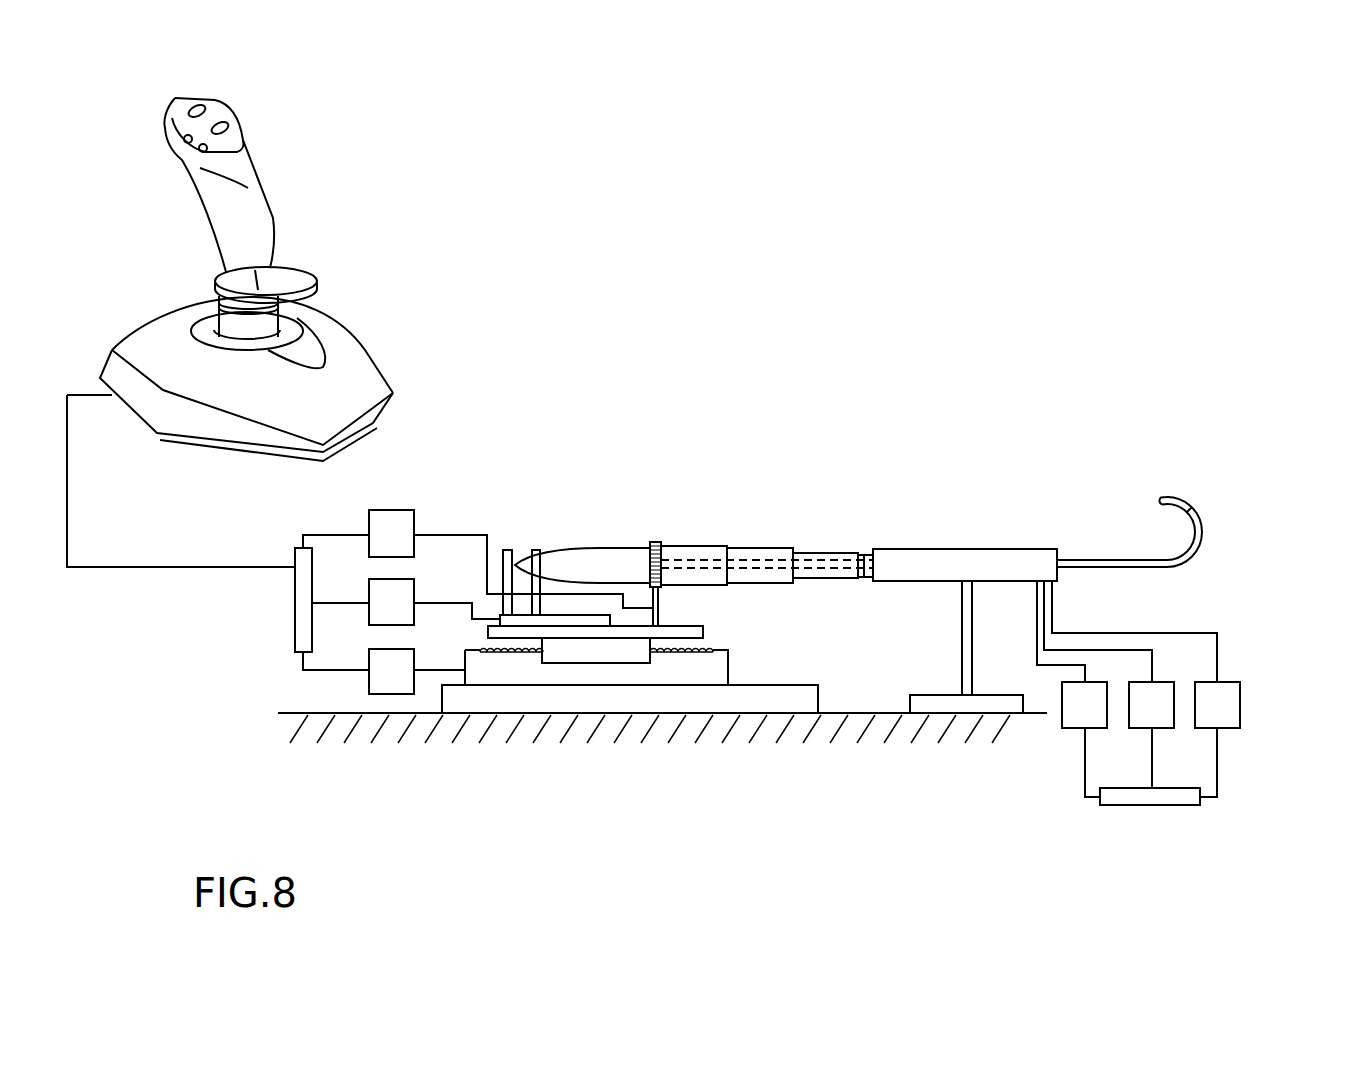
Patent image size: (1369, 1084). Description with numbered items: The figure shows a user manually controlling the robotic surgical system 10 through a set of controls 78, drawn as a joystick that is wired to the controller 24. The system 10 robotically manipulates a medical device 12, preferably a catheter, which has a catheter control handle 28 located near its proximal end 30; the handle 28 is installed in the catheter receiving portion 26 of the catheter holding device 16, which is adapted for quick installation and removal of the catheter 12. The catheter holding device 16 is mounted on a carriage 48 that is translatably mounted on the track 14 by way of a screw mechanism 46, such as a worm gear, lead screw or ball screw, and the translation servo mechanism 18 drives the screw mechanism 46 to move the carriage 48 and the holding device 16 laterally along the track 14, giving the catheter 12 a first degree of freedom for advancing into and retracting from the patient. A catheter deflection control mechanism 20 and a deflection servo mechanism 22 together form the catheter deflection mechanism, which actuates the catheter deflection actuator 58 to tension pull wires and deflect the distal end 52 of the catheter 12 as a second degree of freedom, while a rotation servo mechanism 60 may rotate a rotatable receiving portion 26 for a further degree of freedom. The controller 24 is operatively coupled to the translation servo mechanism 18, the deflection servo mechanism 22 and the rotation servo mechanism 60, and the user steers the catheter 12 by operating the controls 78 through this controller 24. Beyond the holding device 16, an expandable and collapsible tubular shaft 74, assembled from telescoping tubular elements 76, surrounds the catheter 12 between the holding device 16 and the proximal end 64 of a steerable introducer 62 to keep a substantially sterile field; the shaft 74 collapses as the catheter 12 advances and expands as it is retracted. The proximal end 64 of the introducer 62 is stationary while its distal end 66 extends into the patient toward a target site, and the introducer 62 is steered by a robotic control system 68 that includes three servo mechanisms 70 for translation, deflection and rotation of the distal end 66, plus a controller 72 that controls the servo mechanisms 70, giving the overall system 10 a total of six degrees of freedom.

The robotic surgical system 10 is at (775, 372).
The medical device 12 is at (1082, 562).
The track 14 is at (577, 702).
The catheter holding device 16 is at (502, 617).
The translation servo mechanism 18 is at (372, 678).
The catheter deflection control mechanism 20 is at (660, 602).
The deflection servo mechanism 22 is at (397, 510).
The controller 24 is at (298, 594).
The catheter receiving portion 26 is at (518, 560).
The catheter control handle 28 is at (598, 557).
The proximal end 30 is at (656, 536).
The screw mechanism 46 is at (505, 652).
The carriage 48 is at (630, 636).
The distal end 52 is at (1217, 490).
The catheter deflection actuator 58 is at (662, 540).
The rotation servo mechanism 60 is at (375, 588).
The introducer 62 is at (970, 560).
The proximal end 64 is at (884, 536).
The distal end 66 is at (1061, 530).
The robotic control system 68 is at (1280, 709).
The servo mechanism 70 is at (1068, 716).
The controller 72 is at (1184, 800).
The tubular shaft 74 is at (806, 532).
The telescoping tubular elements 76 is at (762, 550).
The set of controls 78 is at (376, 372).